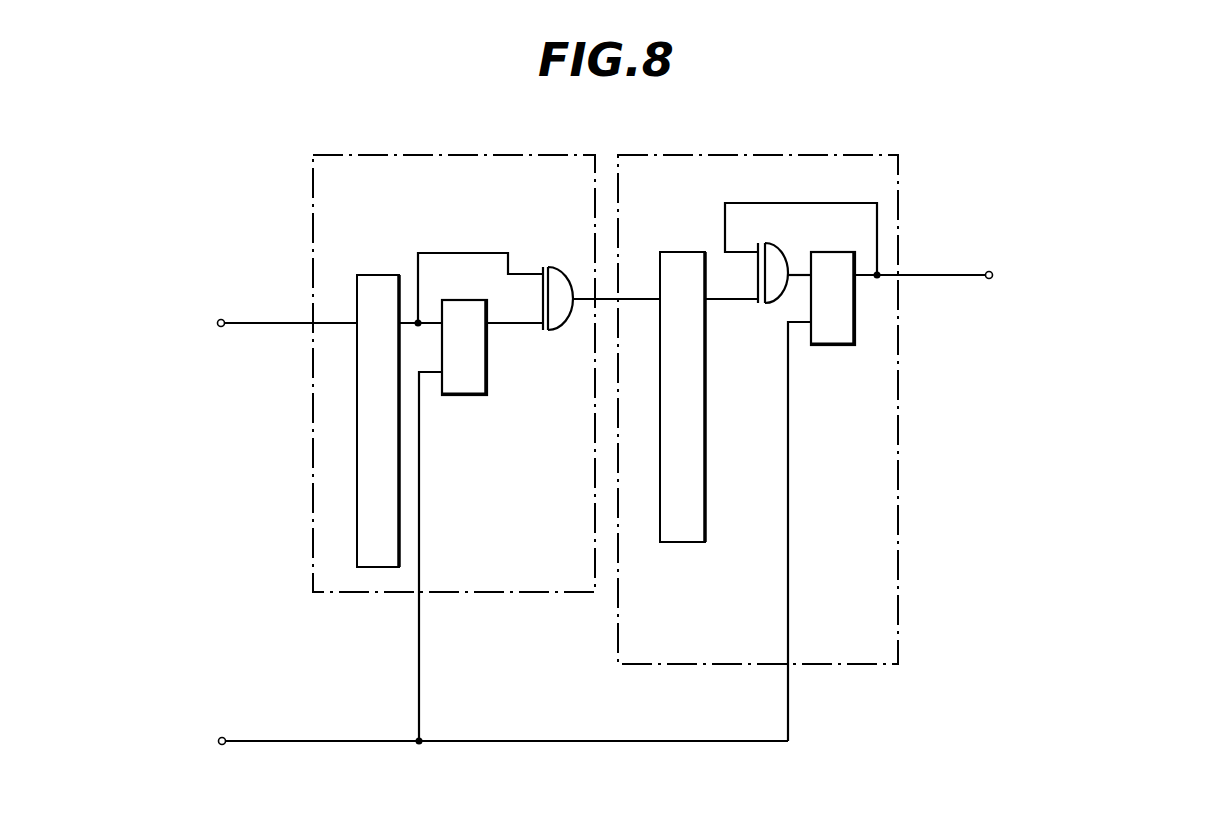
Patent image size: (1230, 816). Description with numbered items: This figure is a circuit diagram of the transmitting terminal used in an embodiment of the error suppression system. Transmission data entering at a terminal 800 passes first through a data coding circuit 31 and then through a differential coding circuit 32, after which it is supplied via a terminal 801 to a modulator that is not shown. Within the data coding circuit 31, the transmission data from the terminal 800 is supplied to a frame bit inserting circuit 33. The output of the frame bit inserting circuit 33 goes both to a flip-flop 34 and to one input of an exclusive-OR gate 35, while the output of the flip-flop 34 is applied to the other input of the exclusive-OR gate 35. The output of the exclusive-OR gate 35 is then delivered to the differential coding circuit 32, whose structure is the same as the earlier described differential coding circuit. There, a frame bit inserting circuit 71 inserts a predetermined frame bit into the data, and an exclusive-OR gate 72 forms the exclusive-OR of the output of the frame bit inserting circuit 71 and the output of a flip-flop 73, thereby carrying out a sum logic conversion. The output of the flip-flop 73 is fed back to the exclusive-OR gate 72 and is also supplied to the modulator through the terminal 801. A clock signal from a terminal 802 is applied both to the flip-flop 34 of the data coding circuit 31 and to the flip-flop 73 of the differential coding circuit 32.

The data coding circuit 31 is at (377, 166).
The differential coding circuit 32 is at (725, 158).
The frame bit inserting circuit 33 is at (370, 275).
The flip-flop 34 is at (472, 395).
The exclusive-OR gate 35 is at (556, 332).
The frame bit inserting circuit 71 is at (683, 542).
The exclusive-OR gate 72 is at (767, 305).
The flip-flop 73 is at (833, 345).
The terminal 800 is at (220, 328).
The terminal 801 is at (984, 280).
The terminal 802 is at (220, 745).